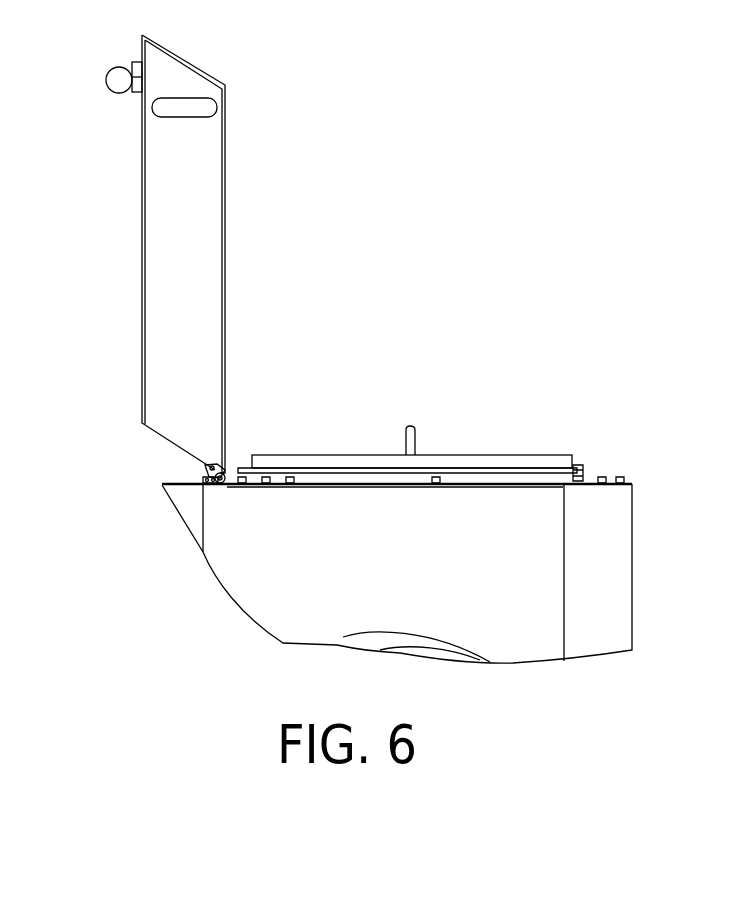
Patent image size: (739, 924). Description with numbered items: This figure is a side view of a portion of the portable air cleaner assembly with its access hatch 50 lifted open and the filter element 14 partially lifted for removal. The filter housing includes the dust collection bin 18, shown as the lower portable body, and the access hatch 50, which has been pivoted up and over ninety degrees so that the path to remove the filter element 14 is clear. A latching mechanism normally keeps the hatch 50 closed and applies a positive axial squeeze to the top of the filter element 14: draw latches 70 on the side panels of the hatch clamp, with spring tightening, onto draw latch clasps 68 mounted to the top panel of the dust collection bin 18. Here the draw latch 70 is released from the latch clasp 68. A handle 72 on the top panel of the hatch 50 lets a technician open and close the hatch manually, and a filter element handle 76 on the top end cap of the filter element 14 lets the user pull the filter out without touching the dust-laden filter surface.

The filter element 14 is at (353, 452).
The dust collection bin 18 is at (212, 593).
The access hatch 50 is at (237, 237).
The draw latch clasp 68 is at (586, 470).
The draw latch 70 is at (183, 98).
The handle 72 is at (106, 72).
The filter element handle 76 is at (417, 425).